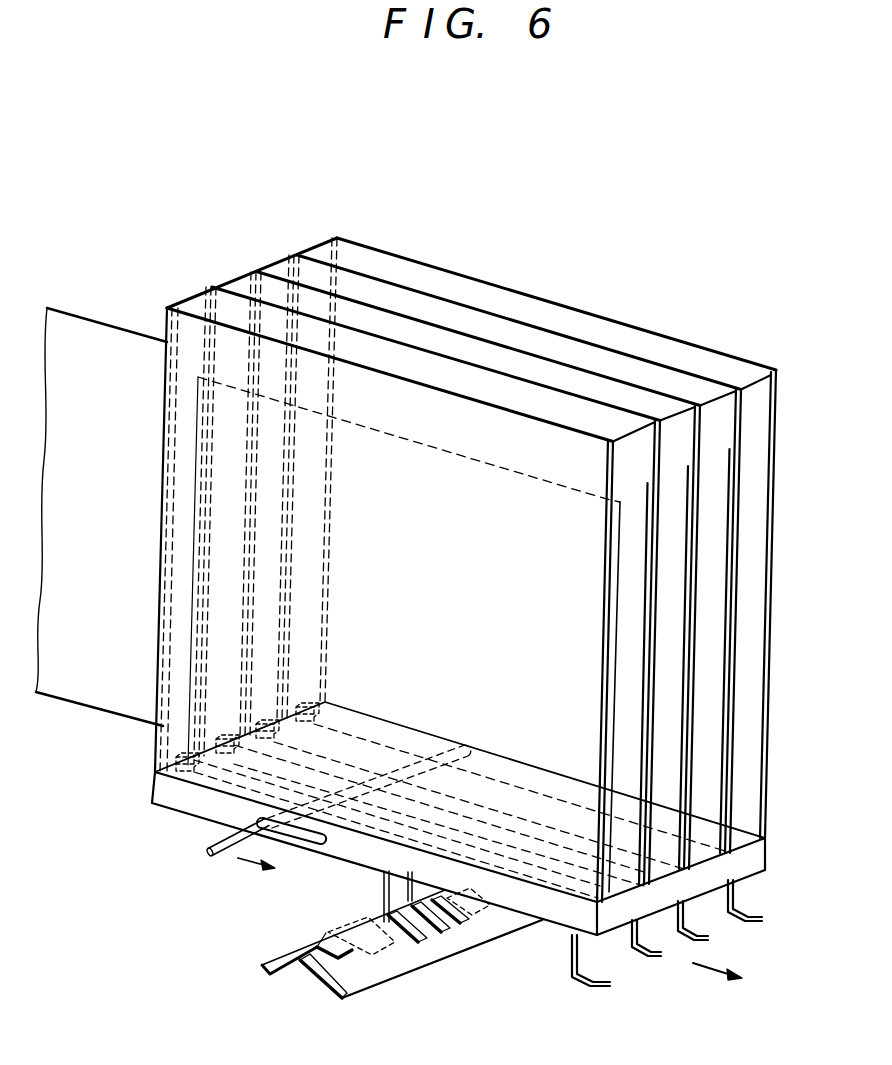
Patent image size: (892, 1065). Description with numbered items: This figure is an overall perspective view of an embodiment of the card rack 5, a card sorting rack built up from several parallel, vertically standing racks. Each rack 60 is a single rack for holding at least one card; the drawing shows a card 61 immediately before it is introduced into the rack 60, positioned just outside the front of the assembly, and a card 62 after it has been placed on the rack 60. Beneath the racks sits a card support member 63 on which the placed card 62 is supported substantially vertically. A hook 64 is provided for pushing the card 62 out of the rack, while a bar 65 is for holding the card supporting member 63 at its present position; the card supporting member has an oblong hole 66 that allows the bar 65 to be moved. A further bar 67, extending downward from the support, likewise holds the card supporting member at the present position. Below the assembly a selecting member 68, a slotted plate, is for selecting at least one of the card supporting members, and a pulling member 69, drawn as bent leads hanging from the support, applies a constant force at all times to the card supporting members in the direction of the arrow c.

The card rack 5 is at (447, 270).
The rack 60 is at (213, 296).
The card 61 is at (90, 336).
The card 62 is at (223, 655).
The card support member 63 is at (182, 805).
The hook 64 is at (172, 777).
The bar 65 is at (226, 849).
The oblong hole 66 is at (297, 843).
The bar 67 is at (384, 890).
The selecting member 68 is at (343, 1002).
The pulling member 69 is at (640, 956).